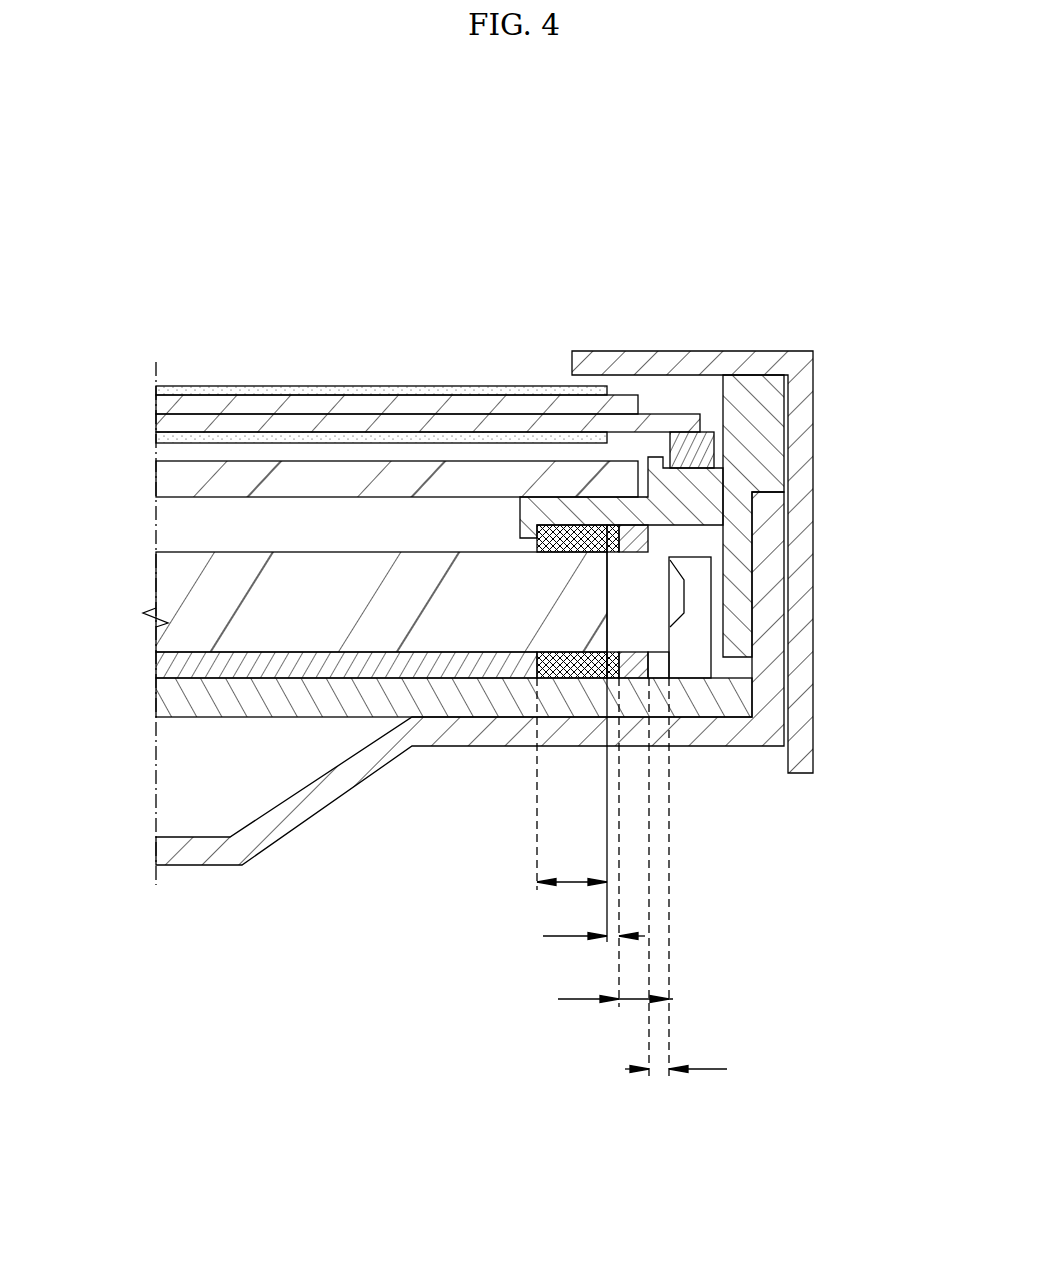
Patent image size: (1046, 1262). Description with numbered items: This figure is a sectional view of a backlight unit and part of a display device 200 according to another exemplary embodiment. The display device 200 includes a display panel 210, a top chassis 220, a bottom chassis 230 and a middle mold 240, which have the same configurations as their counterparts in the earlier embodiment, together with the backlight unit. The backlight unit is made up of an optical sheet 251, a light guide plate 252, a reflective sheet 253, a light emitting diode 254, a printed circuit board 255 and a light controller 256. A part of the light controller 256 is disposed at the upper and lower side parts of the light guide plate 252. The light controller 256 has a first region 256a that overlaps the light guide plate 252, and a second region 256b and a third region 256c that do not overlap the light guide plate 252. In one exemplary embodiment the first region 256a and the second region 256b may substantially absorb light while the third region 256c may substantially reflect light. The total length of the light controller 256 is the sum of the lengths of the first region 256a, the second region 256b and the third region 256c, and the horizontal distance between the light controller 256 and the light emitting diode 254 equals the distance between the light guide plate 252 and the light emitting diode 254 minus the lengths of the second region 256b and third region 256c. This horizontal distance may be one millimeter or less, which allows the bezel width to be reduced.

The display device 200 is at (640, 184).
The display panel 210 is at (158, 405).
The top chassis 220 is at (710, 351).
The bottom chassis 230 is at (707, 746).
The middle mold 240 is at (760, 452).
The optical sheet 251 is at (158, 480).
The light guide plate 252 is at (158, 582).
The reflective sheet 253 is at (158, 665).
The light emitting diode 254 is at (697, 665).
The printed circuit board 255 is at (158, 703).
The light controller 256 is at (500, 855).
The first region 256a is at (559, 670).
The second region 256b is at (612, 673).
The third region 256c is at (628, 670).